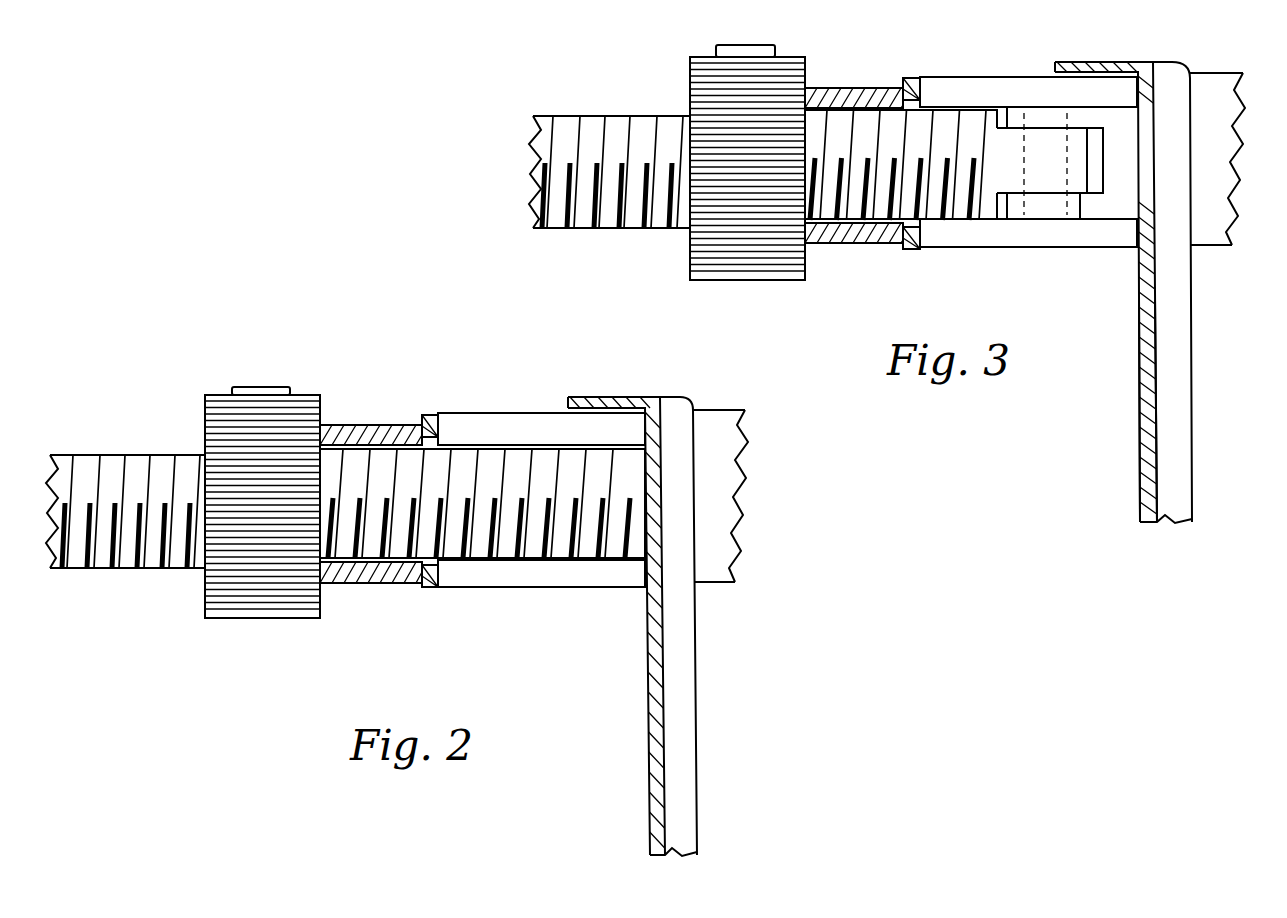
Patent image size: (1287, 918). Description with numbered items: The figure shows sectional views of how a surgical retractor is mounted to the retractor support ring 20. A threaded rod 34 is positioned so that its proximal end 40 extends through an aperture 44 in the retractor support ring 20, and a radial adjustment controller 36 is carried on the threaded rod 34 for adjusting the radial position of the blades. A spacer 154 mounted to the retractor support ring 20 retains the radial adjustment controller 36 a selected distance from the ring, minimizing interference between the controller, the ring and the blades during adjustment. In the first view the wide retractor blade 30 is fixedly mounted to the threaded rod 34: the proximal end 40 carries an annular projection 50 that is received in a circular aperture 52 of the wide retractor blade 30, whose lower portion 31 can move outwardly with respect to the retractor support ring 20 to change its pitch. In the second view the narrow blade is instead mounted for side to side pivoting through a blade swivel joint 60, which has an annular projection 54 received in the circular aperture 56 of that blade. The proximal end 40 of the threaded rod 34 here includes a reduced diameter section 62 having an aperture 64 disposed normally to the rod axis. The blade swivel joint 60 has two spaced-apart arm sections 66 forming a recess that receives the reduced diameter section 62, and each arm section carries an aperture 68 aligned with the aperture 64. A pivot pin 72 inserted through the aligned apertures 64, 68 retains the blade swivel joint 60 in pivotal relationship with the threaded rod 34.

In FIG. 2, the retractor support ring 20 is at (345, 507).
In FIG. 3, the retractor support ring 20 is at (833, 164).
In FIG. 2, the wide retractor blade 30 is at (655, 680).
In FIG. 3, the lower portion 31 is at (1150, 438).
In FIG. 2, the threaded rod 34 is at (162, 468).
In FIG. 3, the threaded rod 34 is at (622, 125).
In FIG. 2, the radial adjustment controller 36 is at (232, 606).
In FIG. 3, the radial adjustment controller 36 is at (723, 88).
In FIG. 2, the proximal end 40 is at (613, 445).
In FIG. 3, the proximal end 40 is at (982, 107).
In FIG. 2, the aperture 44 is at (430, 417).
In FIG. 2, the annular projection 50 is at (652, 485).
In FIG. 2, the circular aperture 52 is at (650, 530).
In FIG. 3, the annular projection 54 is at (1145, 143).
In FIG. 3, the circular aperture 56 is at (1148, 190).
In FIG. 3, the blade swivel joint 60 is at (1106, 115).
In FIG. 3, the reduced diameter section 62 is at (1082, 200).
In FIG. 3, the aperture 64 is at (1023, 178).
In FIG. 3, the spaced-apart arm sections 66 is at (1017, 117).
In FIG. 3, the aperture 68 is at (1058, 122).
In FIG. 3, the pivot pin 72 is at (1043, 138).
In FIG. 2, the spacer 154 is at (345, 427).
In FIG. 3, the spacer 154 is at (855, 102).